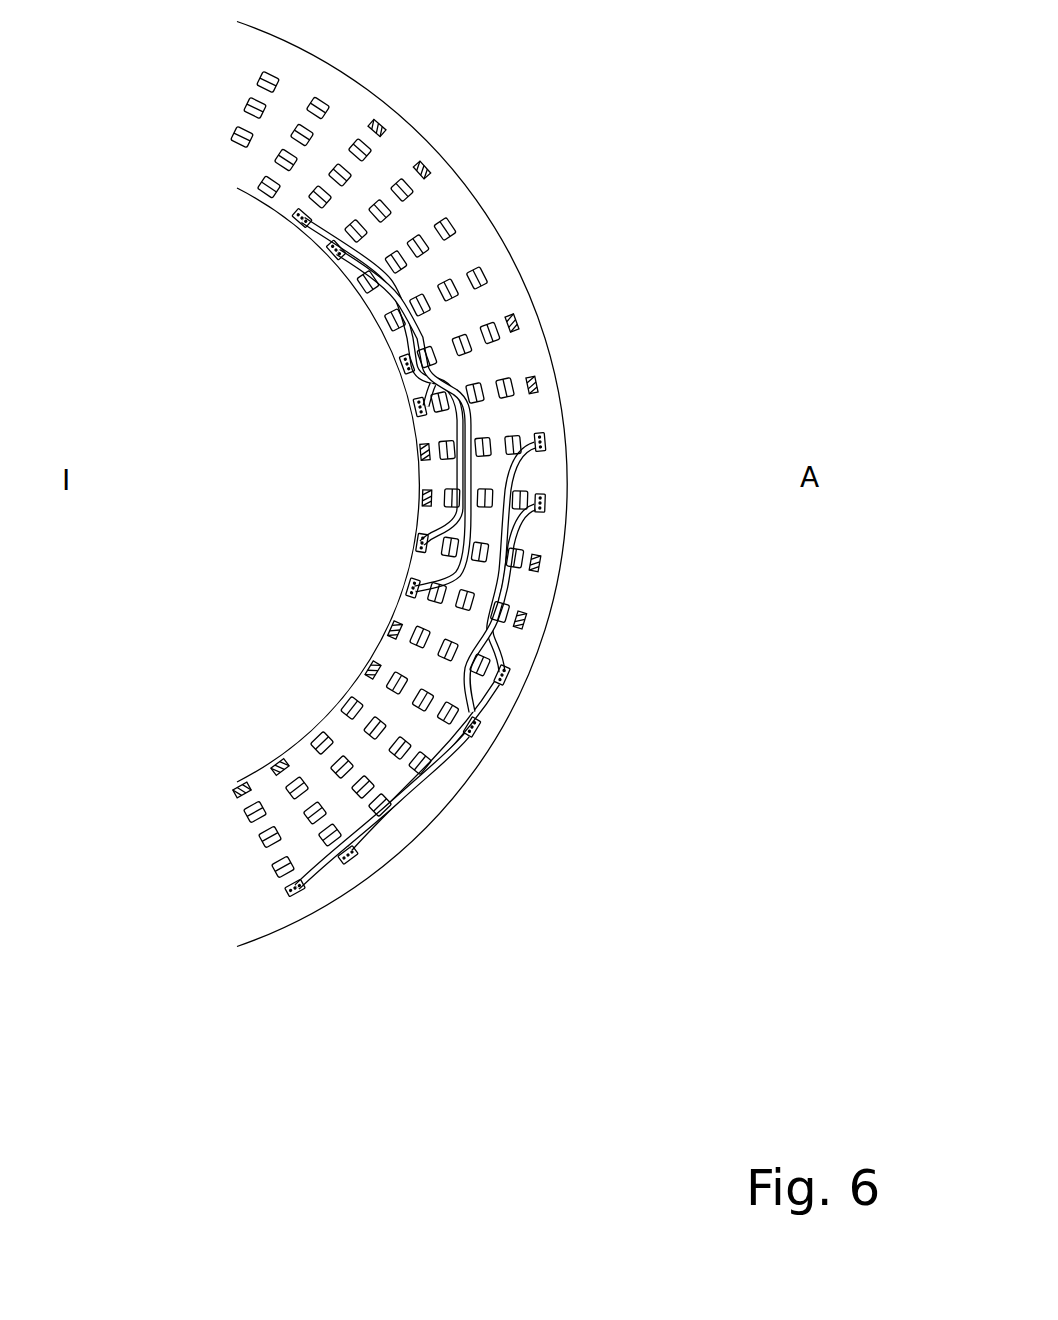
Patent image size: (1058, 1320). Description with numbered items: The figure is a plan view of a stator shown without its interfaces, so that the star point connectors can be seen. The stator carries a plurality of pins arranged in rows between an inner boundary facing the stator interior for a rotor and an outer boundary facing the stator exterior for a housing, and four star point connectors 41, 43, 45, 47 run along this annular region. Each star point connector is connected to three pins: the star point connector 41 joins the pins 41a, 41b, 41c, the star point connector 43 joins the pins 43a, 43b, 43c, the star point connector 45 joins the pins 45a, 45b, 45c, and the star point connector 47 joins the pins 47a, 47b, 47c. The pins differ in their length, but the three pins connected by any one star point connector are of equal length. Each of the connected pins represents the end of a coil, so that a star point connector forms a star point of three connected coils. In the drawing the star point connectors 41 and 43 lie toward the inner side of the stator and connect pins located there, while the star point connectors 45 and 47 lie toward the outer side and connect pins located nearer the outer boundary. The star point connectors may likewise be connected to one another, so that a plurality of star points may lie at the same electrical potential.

The star point connector 41 is at (303, 215).
The pin 41a is at (292, 226).
The pin 41b is at (397, 372).
The pin 41c is at (412, 538).
The star point connector 43 is at (410, 332).
The pin 43a is at (322, 262).
The pin 43b is at (407, 413).
The pin 43c is at (405, 583).
The star point connector 45 is at (460, 752).
The pin 45a is at (551, 436).
The pin 45b is at (512, 678).
The pin 45c is at (356, 866).
The star point connector 47 is at (417, 785).
The pin 47a is at (552, 497).
The pin 47b is at (483, 735).
The pin 47c is at (303, 899).